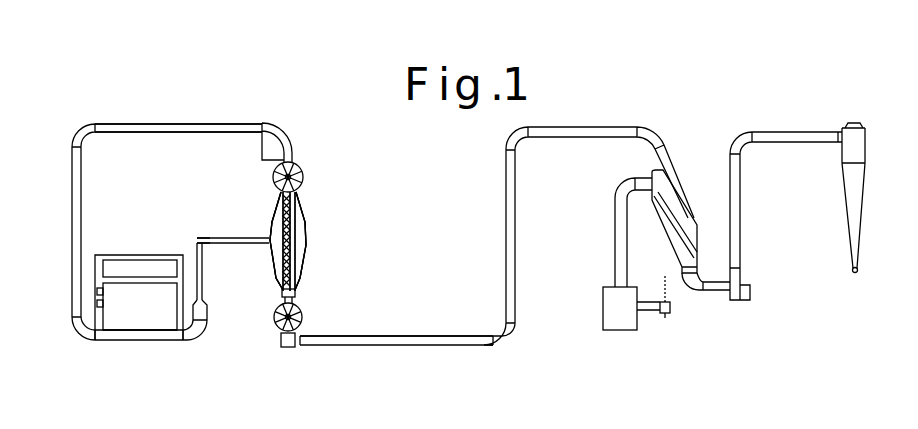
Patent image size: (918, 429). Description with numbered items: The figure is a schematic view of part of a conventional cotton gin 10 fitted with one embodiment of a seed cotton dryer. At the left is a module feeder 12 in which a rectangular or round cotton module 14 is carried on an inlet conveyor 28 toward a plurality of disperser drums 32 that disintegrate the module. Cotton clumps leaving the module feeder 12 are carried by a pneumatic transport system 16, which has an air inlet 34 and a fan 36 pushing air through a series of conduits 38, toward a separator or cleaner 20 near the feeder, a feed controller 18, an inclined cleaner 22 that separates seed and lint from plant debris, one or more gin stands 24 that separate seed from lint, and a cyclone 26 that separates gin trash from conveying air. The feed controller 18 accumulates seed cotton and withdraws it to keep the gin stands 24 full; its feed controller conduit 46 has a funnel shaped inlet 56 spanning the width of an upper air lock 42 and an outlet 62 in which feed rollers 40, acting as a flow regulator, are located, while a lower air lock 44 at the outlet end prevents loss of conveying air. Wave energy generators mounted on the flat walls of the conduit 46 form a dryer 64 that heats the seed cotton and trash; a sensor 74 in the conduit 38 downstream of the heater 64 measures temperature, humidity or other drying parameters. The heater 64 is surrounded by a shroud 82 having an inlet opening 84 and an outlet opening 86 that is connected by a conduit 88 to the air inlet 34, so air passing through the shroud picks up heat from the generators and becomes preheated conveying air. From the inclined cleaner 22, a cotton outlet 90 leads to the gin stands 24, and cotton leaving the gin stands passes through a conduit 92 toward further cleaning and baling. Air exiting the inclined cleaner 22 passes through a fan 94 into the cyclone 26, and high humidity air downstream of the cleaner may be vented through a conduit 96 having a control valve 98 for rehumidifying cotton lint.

The cotton gin 10 is at (415, 196).
The module feeder 12 is at (104, 248).
The cotton module 14 is at (144, 315).
The transport system 16 is at (178, 120).
The feed controller 18 is at (305, 209).
The separator/cleaner 20 is at (272, 125).
The inclined cleaner 22 is at (698, 229).
The gin stand 24 is at (607, 292).
The cyclone 26 is at (852, 205).
The inlet conveyor 28 is at (157, 318).
The disperser drums 32 is at (96, 297).
The air inlet 34 is at (212, 322).
The fan 36 is at (197, 262).
The conduits 38 is at (72, 211).
The feed rollers 40 is at (296, 297).
The air lock 42 is at (266, 167).
The air lock 44 is at (278, 306).
The feed controller conduit 46 is at (297, 252).
The funnel shaped inlet 56 is at (311, 188).
The outlet 62 is at (282, 287).
The dryer 64 is at (266, 208).
The sensor 74 is at (321, 340).
The shroud 82 is at (298, 227).
The inlet opening 84 is at (304, 240).
The outlet opening 86 is at (269, 231).
The conduit 88 is at (203, 241).
The cotton outlet 90 is at (612, 207).
The conduit 92 is at (652, 312).
The fan 94 is at (671, 306).
The conduit 96 is at (680, 260).
The control valve 98 is at (663, 297).